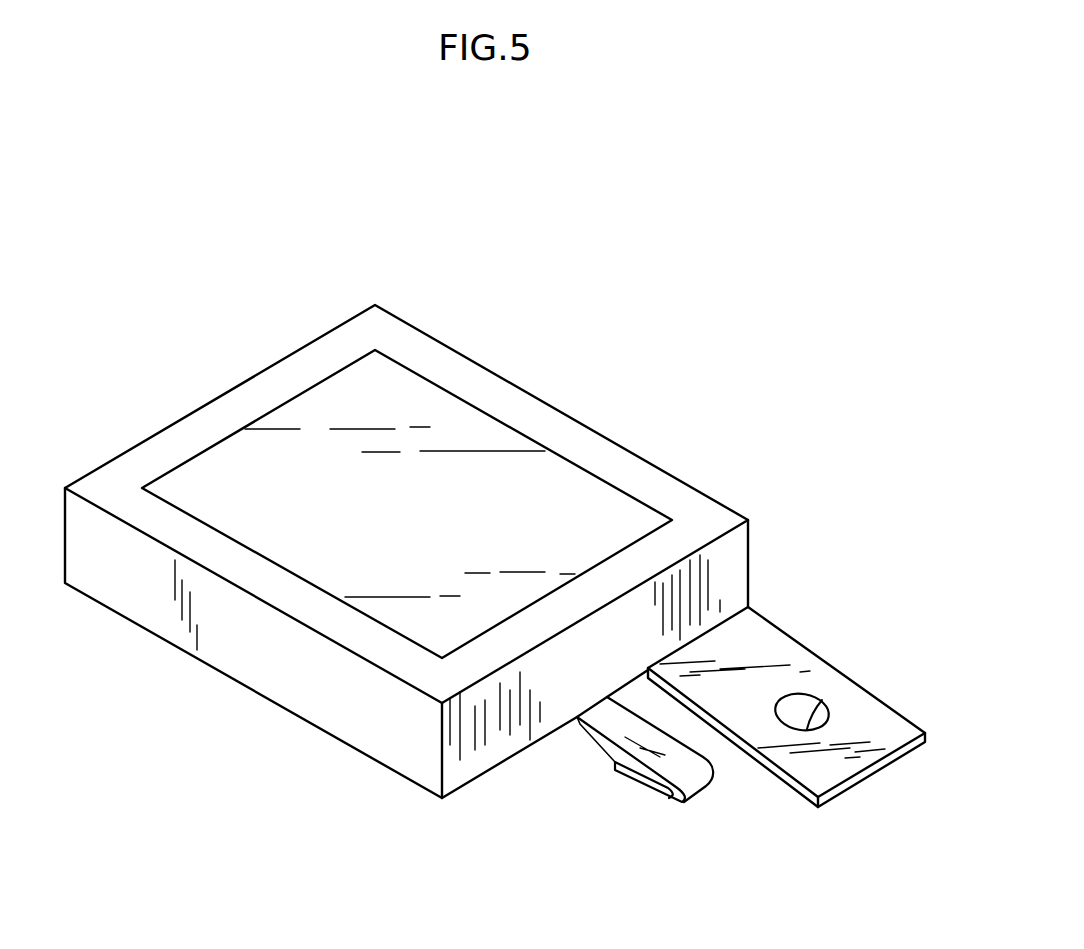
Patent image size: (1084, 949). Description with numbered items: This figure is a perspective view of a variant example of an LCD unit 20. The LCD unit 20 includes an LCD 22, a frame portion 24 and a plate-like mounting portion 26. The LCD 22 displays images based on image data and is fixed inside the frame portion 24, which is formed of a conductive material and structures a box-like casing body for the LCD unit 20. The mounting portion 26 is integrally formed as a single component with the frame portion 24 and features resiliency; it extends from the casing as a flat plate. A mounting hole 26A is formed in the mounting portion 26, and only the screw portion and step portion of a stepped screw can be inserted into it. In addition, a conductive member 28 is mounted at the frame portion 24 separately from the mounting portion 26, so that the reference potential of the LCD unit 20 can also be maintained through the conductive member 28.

The LCD unit 20 is at (578, 343).
The LCD 22 is at (398, 393).
The frame portion 24 is at (147, 600).
The mounting portion 26 is at (783, 657).
The mounting hole 26A is at (822, 708).
The conductive member 28 is at (617, 723).